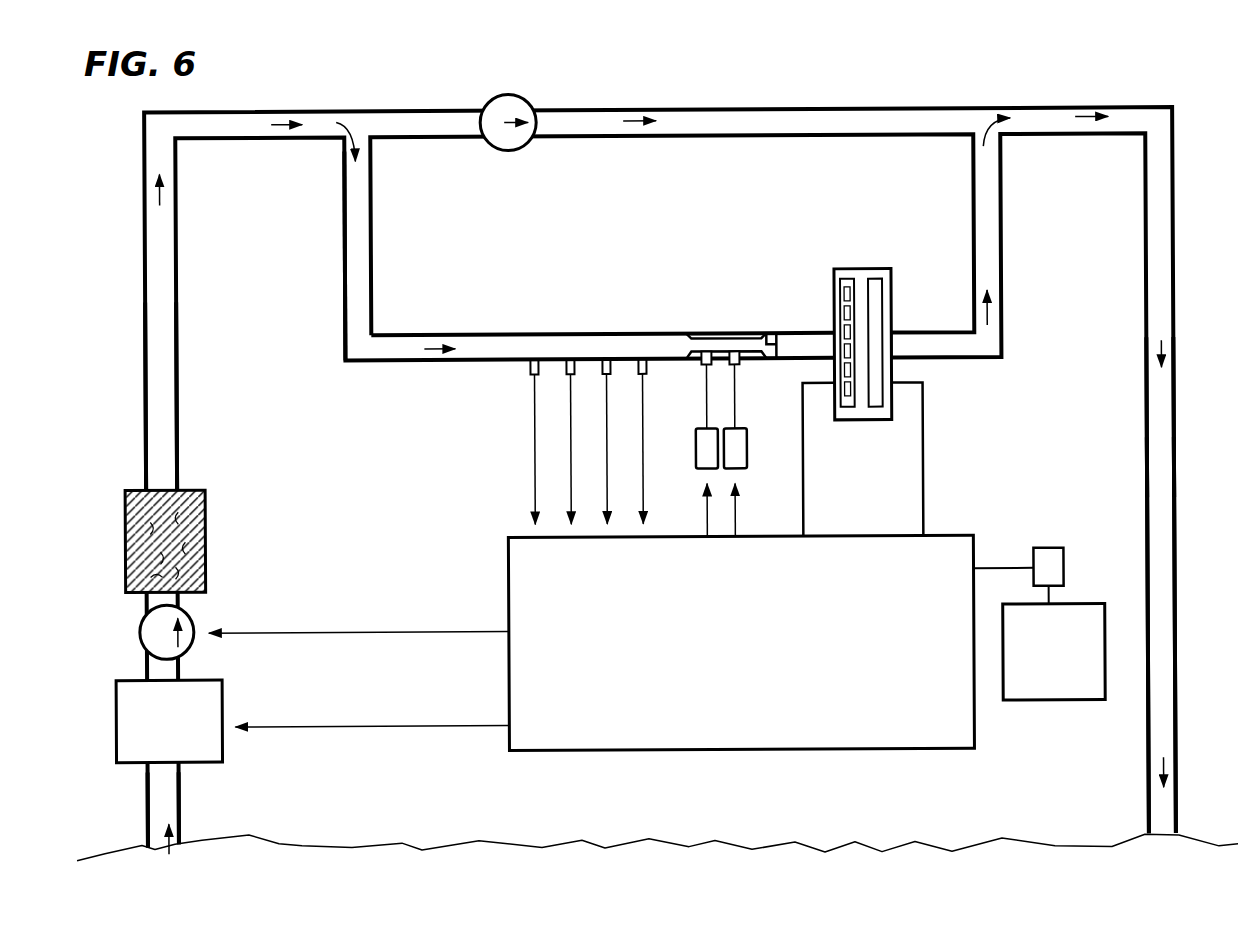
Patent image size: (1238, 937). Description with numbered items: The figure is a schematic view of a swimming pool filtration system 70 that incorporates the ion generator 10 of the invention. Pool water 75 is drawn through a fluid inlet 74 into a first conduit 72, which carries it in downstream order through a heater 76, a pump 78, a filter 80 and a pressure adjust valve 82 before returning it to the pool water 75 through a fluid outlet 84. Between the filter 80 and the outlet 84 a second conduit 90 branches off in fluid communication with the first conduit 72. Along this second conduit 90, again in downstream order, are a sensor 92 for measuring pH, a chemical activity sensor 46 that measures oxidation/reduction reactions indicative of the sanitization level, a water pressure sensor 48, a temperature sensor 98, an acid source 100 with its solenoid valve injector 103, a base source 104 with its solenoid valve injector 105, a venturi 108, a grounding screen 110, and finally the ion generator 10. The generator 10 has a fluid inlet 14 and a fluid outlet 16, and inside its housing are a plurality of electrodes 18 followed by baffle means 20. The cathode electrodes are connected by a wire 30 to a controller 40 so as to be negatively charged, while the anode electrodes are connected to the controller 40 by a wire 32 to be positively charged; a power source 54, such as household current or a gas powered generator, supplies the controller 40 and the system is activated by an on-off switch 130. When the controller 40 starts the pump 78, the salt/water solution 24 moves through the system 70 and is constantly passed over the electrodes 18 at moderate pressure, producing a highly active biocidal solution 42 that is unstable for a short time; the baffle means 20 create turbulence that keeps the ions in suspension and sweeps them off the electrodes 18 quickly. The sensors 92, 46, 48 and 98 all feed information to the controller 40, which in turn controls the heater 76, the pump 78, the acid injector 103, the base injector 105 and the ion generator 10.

The ion generator 10 is at (895, 302).
The fluid inlet 14 is at (828, 333).
The fluid outlet 16 is at (900, 360).
The electrodes 18 is at (876, 312).
The baffle means 20 is at (847, 280).
The salt/water solution 24 is at (161, 300).
The wire 30 is at (805, 455).
The wire 32 is at (923, 455).
The controller 40 is at (928, 752).
The biocidal solution 42 is at (1162, 330).
The chemical activity sensor 46 is at (569, 438).
The water pressure sensor 48 is at (605, 438).
The power source 54 is at (1045, 704).
The pool filtration system 70 is at (828, 73).
The first conduit 72 is at (178, 397).
The fluid inlet 74 is at (180, 805).
The pool water 75 is at (434, 865).
The heater 76 is at (222, 708).
The pump 78 is at (196, 618).
The filter 80 is at (206, 526).
The pressure adjust valve 82 is at (515, 95).
The fluid outlet 84 is at (1176, 449).
The second conduit 90 is at (343, 208).
The pH sensor 92 is at (533, 438).
The temperature sensor 98 is at (641, 438).
The acid source 100 is at (692, 463).
The solenoid valve injector 103 is at (700, 362).
The base source 104 is at (752, 463).
The solenoid valve injector 105 is at (744, 362).
The venturi 108 is at (713, 333).
The grounding screen 110 is at (768, 333).
The on-off switch 130 is at (1043, 550).